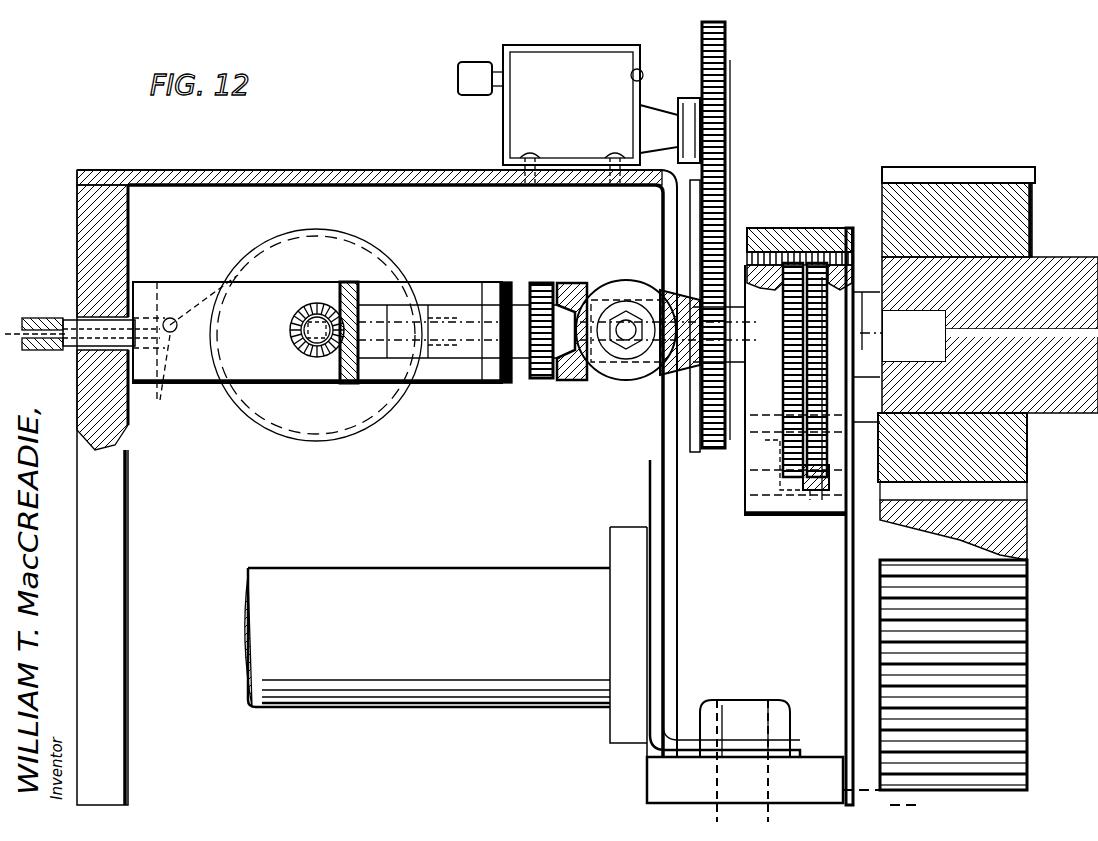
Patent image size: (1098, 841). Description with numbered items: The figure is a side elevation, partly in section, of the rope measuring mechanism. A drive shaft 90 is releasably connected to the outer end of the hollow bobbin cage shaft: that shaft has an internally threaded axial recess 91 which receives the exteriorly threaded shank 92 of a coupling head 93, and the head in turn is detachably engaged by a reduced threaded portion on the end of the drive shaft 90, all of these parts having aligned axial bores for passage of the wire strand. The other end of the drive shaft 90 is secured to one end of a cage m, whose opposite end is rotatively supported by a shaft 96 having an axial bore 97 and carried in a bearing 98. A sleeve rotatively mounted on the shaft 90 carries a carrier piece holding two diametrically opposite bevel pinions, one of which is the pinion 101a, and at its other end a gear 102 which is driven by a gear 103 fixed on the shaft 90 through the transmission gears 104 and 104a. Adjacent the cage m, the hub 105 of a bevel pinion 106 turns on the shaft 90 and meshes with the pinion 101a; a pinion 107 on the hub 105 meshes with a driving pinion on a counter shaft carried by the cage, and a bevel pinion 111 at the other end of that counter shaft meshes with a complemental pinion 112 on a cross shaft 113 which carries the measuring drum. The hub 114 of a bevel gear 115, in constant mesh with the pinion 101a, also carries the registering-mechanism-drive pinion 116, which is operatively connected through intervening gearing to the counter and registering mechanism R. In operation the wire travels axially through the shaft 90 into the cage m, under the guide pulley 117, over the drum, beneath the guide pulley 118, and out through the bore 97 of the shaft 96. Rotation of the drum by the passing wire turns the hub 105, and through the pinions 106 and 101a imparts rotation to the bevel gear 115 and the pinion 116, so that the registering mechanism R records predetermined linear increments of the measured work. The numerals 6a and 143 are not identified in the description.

The bearing block 6a is at (1048, 275).
The drive shaft 90 is at (764, 345).
The internally threaded axial recess 91 is at (914, 306).
The exteriorly threaded shank 92 is at (862, 418).
The coupling head 93 is at (862, 292).
The shaft 96 is at (70, 318).
The axial bore 97 is at (45, 322).
The bearing 98 is at (103, 560).
The bevel pinion 101a is at (632, 380).
The gear 102 is at (800, 240).
The gear 103 is at (820, 255).
The transmission gear 104 is at (812, 500).
The transmission gear 104a is at (790, 440).
The hub 105 is at (503, 385).
The bevel pinion 106 is at (562, 290).
The pinion 107 is at (545, 382).
The bevel pinion 111 is at (345, 383).
The complemental pinion 112 is at (288, 330).
The cross shaft 113 is at (256, 428).
The hub 114 is at (700, 255).
The bevel gear 115 is at (690, 300).
The registering-mechanism-drive pinion 116 is at (705, 420).
The guide pulley 117 is at (452, 368).
The guide pulley 118 is at (160, 395).
The bracket 143 is at (712, 132).
The counter and registering mechanism R is at (550, 115).
The cage m is at (195, 292).